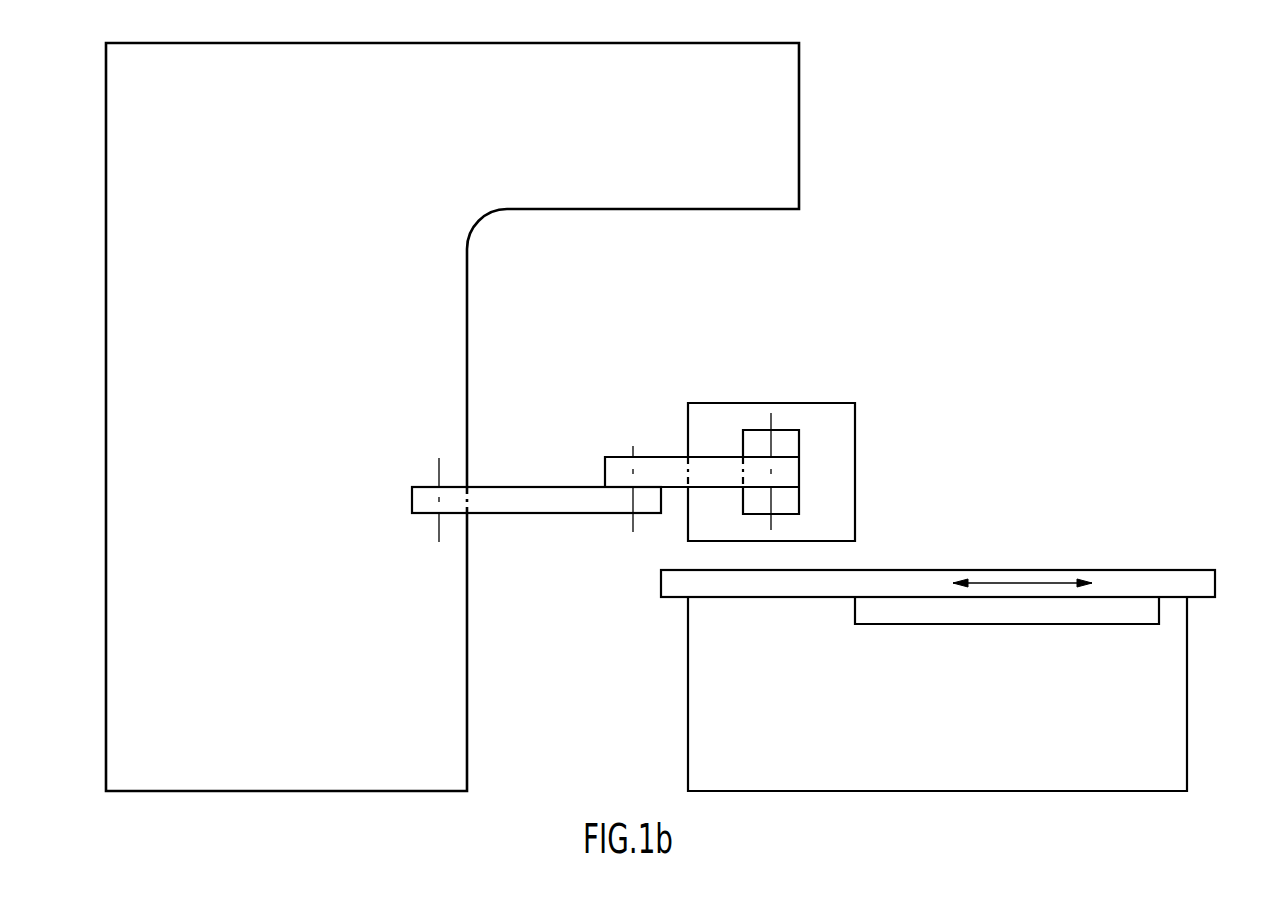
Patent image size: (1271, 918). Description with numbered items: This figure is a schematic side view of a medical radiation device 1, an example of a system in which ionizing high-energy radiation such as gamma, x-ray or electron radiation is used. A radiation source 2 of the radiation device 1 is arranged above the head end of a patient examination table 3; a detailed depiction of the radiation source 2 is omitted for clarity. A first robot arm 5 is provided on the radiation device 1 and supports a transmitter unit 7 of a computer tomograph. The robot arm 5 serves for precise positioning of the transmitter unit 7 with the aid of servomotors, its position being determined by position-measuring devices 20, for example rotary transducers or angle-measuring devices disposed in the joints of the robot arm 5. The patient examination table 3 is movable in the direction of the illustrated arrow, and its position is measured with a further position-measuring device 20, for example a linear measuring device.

The medical radiation device 1 is at (1078, 69).
The radiation source 2 is at (727, 210).
The patient examination table 3 is at (688, 696).
The first robot arm 5 is at (510, 514).
The transmitter unit 7 is at (855, 425).
The position-measuring device 20 is at (772, 457).